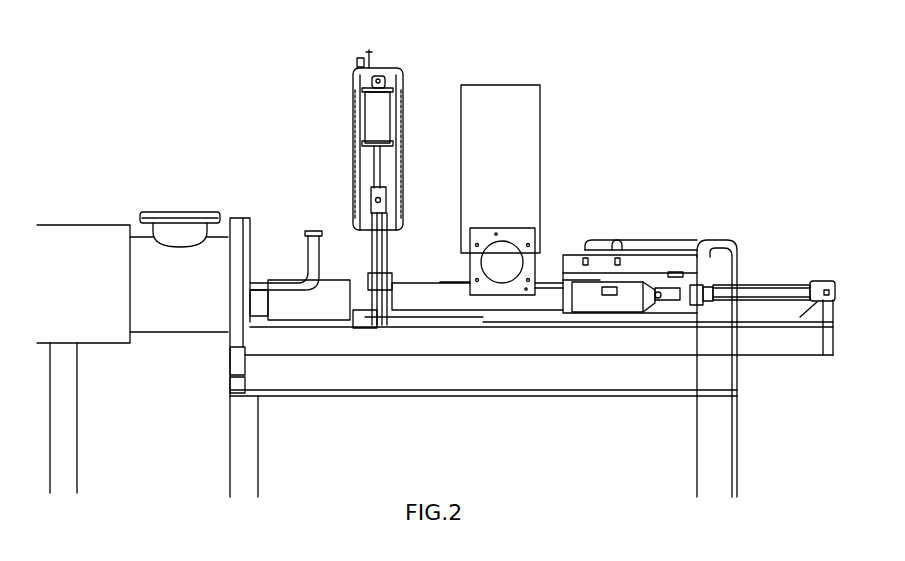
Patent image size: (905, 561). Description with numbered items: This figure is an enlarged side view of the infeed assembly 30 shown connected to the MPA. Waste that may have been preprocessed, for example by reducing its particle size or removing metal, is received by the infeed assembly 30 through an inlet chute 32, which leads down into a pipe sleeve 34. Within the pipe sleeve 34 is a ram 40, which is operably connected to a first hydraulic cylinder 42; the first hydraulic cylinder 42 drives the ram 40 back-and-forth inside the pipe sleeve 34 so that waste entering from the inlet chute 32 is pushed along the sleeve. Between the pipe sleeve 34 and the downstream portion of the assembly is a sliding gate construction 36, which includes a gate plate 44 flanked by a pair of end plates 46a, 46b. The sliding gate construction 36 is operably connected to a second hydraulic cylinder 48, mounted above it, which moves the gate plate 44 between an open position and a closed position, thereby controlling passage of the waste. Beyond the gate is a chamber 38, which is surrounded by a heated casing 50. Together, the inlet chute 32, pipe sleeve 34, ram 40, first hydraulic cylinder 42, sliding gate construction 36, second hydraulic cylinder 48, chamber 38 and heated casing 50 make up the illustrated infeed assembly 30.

The infeed assembly 30 is at (695, 73).
The inlet chute 32 is at (507, 138).
The pipe sleeve 34 is at (497, 302).
The sliding gate construction 36 is at (326, 177).
The chamber 38 is at (290, 310).
The ram 40 is at (615, 302).
The first hydraulic cylinder 42 is at (748, 292).
The gate plate 44 is at (378, 268).
The end plate 46a is at (363, 307).
The end plate 46b is at (390, 303).
The second hydraulic cylinder 48 is at (373, 120).
The heated casing 50 is at (275, 313).